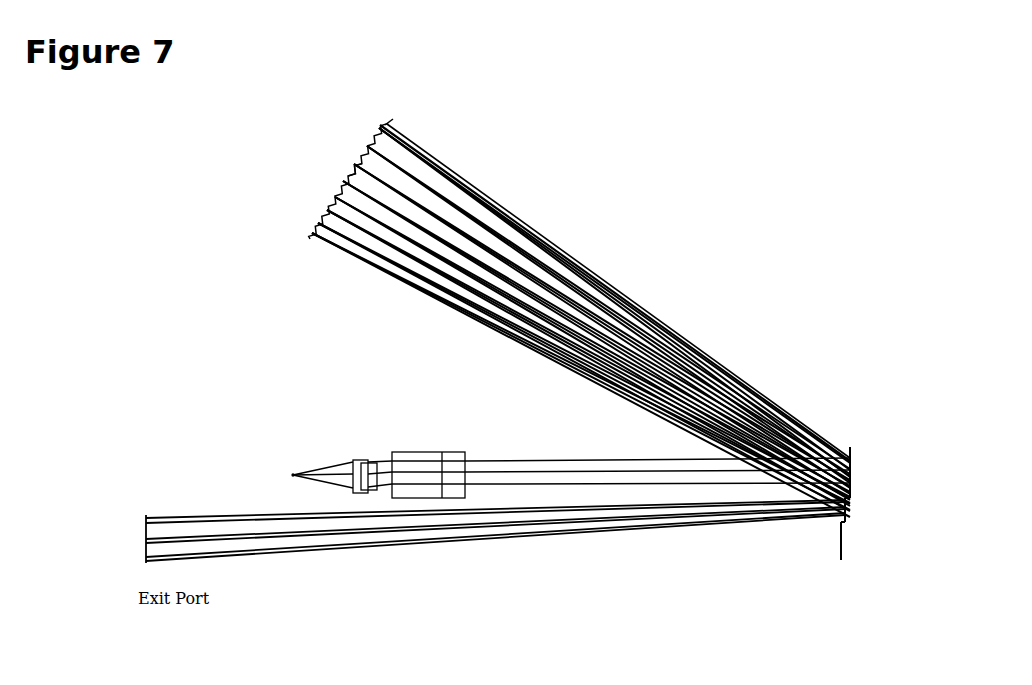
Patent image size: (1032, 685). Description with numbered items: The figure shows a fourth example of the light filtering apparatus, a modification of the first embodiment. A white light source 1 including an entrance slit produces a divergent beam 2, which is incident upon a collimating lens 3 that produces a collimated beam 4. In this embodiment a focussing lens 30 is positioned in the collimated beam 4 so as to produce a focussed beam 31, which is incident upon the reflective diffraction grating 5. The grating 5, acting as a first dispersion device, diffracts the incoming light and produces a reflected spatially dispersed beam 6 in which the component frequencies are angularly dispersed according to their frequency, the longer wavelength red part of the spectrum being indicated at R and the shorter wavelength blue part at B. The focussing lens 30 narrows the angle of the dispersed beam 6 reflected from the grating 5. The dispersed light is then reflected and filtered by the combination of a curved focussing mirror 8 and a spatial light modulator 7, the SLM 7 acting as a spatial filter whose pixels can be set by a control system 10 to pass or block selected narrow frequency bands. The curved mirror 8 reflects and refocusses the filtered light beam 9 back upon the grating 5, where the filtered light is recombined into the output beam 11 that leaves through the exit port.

The white light source 1 is at (295, 475).
The divergent beam 2 is at (332, 467).
The collimating lens 3 is at (357, 460).
The collimated beam 4 is at (383, 465).
The focussing lens 30 is at (413, 452).
The focussed beam 31 is at (582, 457).
The reflective diffraction grating 5 is at (843, 540).
The dispersed beam 6 is at (655, 325).
The spatial light modulator 7 is at (357, 167).
The curved focussing mirror 8 is at (367, 157).
The filtered light beam 9 is at (495, 210).
The control system 10 is at (196, 284).
The output beam 11 is at (258, 542).
The red part of the spectrum R is at (397, 133).
The blue part of the spectrum B is at (338, 296).